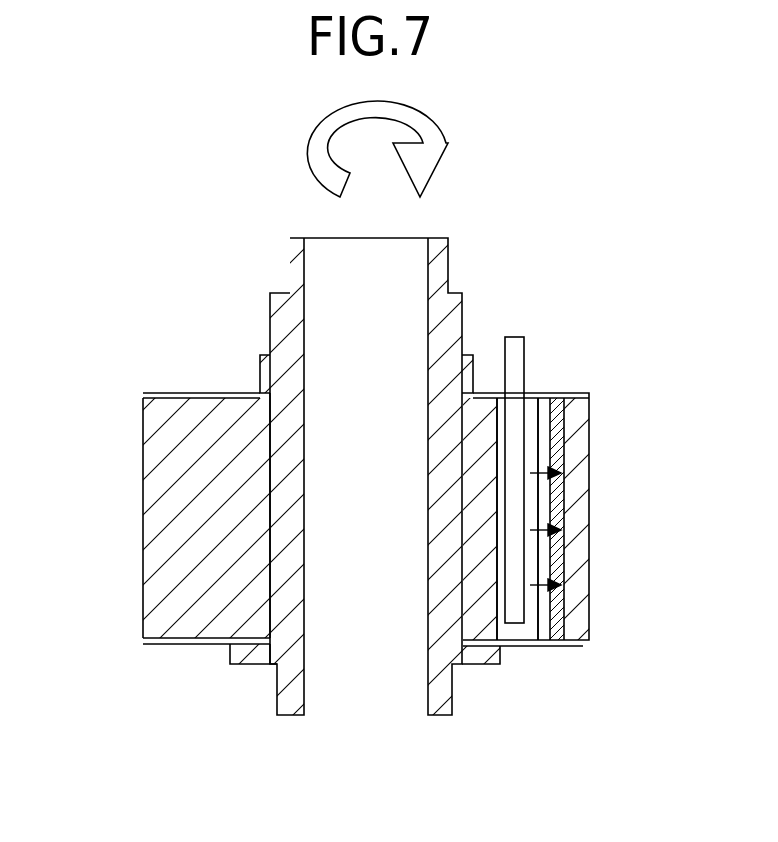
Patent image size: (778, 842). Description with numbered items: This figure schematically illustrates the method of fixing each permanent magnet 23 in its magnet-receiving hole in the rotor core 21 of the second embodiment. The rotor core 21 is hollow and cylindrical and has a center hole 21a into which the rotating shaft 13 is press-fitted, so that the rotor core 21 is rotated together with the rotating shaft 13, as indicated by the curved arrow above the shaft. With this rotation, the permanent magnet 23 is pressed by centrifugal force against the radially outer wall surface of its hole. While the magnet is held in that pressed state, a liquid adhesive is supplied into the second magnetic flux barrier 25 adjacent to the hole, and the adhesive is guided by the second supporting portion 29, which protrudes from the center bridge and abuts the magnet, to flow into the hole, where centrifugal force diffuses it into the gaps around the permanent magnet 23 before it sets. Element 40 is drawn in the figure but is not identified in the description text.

The rotating shaft 13 is at (437, 632).
The rotor core 21 is at (170, 480).
The center hole 21a is at (270, 587).
The permanent magnet 23 is at (562, 610).
The second magnetic flux barrier 25 is at (512, 632).
The second supporting portion 29 is at (543, 628).
The sensor 40 is at (517, 352).